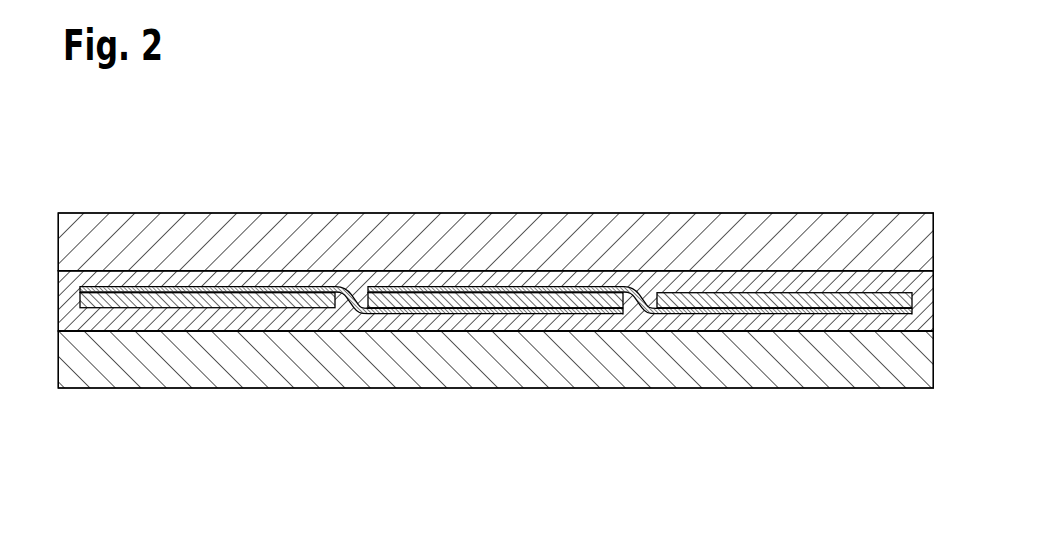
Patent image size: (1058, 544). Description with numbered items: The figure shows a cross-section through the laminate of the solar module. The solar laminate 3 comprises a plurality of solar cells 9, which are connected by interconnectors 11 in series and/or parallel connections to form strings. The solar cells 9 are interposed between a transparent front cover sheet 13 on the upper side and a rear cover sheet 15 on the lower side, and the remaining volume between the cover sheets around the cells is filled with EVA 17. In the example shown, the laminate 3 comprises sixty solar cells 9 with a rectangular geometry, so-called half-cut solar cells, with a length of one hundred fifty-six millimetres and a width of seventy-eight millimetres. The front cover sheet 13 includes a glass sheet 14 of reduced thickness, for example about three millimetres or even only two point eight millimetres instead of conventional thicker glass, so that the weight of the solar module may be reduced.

The solar laminate 3 is at (475, 288).
The solar cells 9 is at (211, 300).
The interconnectors 11 is at (362, 290).
The transparent front cover sheet 13 is at (561, 238).
The glass sheet 14 is at (676, 228).
The rear cover sheet 15 is at (564, 367).
The EVA 17 is at (800, 283).